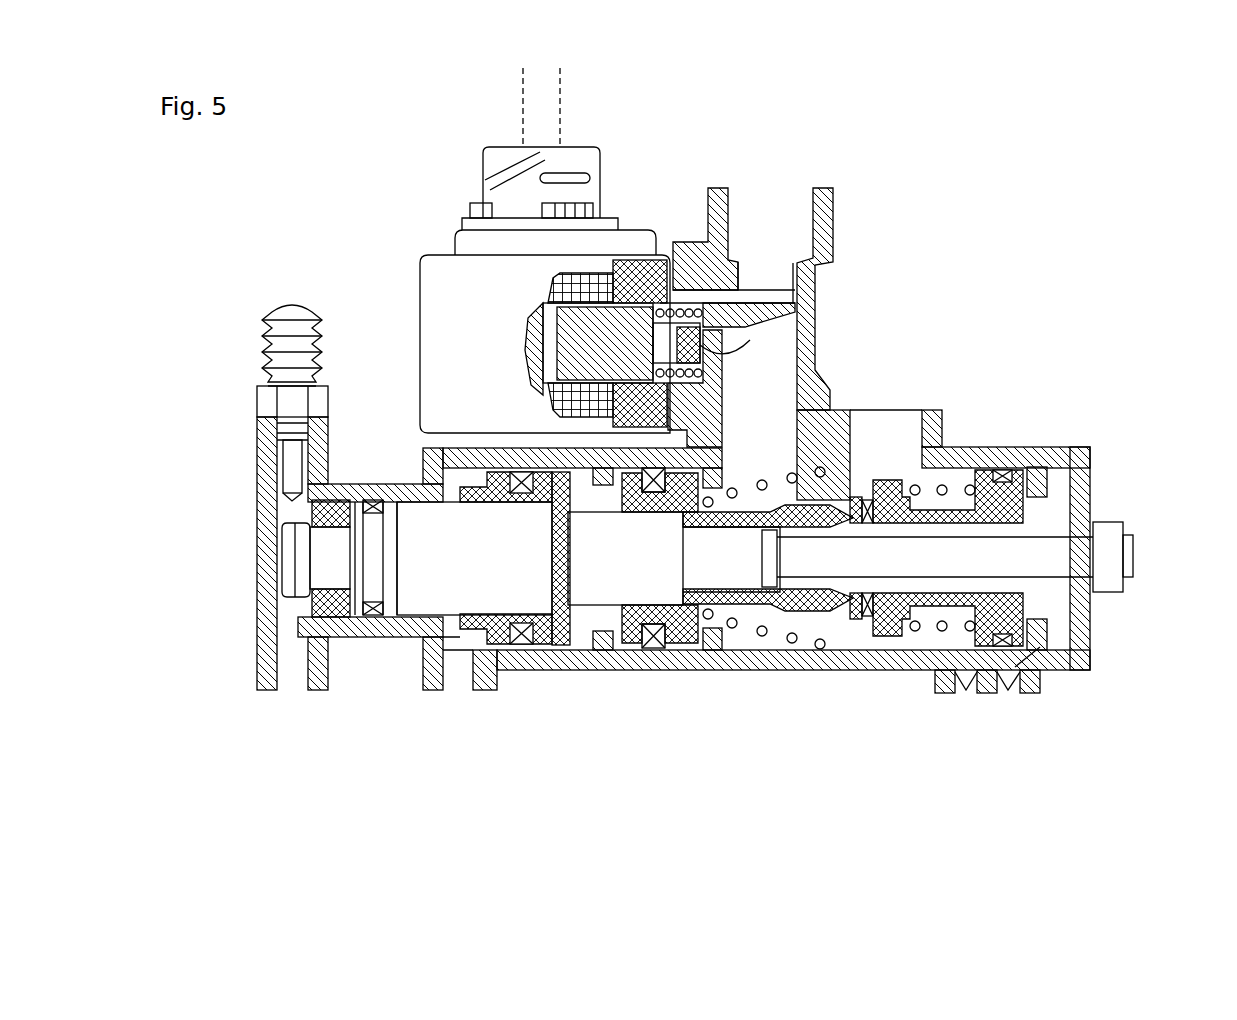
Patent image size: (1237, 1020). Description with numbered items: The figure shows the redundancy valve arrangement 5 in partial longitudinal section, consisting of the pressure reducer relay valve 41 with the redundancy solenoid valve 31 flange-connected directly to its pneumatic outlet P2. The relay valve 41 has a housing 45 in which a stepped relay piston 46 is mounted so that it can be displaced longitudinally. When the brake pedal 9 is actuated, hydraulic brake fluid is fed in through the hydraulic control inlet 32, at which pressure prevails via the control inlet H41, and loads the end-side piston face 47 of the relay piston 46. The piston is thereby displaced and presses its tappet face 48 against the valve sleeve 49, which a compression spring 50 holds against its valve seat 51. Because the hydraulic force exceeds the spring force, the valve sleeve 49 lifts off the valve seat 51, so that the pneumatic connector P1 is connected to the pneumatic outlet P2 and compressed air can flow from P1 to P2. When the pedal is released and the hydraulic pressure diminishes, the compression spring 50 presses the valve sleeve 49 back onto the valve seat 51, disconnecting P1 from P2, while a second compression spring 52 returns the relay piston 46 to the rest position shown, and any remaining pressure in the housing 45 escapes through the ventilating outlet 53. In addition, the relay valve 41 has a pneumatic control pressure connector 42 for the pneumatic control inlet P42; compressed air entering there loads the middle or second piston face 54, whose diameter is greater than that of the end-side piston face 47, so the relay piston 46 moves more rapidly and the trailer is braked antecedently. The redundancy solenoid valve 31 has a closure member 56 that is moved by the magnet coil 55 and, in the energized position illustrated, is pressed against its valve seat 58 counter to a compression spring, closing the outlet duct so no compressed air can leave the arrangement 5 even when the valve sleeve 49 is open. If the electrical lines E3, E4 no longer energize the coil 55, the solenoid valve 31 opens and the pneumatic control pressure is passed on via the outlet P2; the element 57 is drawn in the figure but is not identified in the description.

The redundancy valve arrangement 5 is at (725, 330).
The brake pedal 9 is at (718, 298).
The redundancy solenoid valve 31 is at (408, 272).
The hydraulic control inlet 32 is at (285, 690).
The pressure reducer relay valve 41 is at (1128, 483).
The pneumatic control pressure connector 42 is at (443, 692).
The housing 45 is at (668, 650).
The relay piston 46 is at (573, 615).
The end-side piston face 47 is at (296, 600).
The tappet face 48 is at (840, 600).
The valve sleeve 49 is at (897, 632).
The compression spring 50 is at (916, 632).
The valve seat 51 is at (868, 597).
The second compression spring 52 is at (733, 628).
The ventilating outlet 53 is at (1040, 670).
The second piston face 54 is at (470, 690).
The magnet coil 55 is at (590, 268).
The closure member 56 is at (630, 330).
The valve seat 57 is at (722, 370).
The valve seat 58 is at (830, 275).
The electrical line E3 is at (521, 92).
The electrical line E4 is at (562, 88).
The control inlet H41 is at (310, 692).
The pneumatic connector P1 is at (914, 420).
The pneumatic outlet P2 is at (817, 190).
The pneumatic control inlet P42 is at (464, 690).